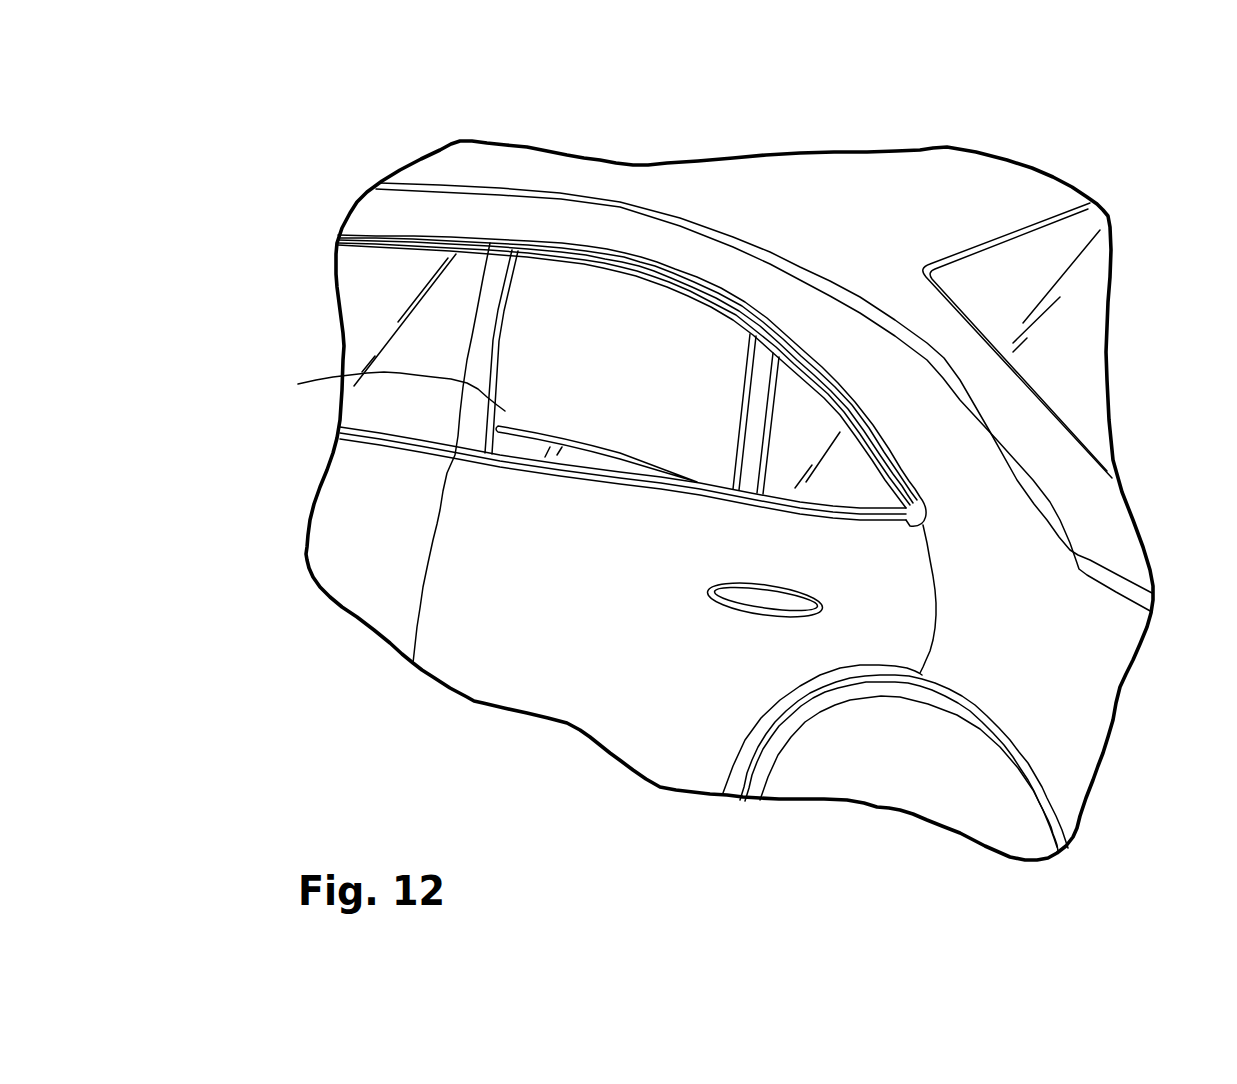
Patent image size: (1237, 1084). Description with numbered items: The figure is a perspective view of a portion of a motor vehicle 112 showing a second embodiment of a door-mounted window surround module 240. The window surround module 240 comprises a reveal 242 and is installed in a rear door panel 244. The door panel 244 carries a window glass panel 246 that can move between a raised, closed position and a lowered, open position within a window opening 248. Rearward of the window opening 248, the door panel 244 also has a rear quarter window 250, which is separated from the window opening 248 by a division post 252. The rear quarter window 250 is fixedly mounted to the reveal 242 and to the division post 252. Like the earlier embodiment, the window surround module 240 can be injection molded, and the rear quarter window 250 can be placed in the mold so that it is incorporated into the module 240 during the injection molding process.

The vehicle body 112 is at (1006, 184).
The window surround module 240 is at (826, 362).
The reveal 242 is at (603, 277).
The rear door panel 244 is at (917, 617).
The window glass panel 246 is at (379, 391).
The window opening 248 is at (578, 381).
The rear quarter window 250 is at (866, 492).
The division post 252 is at (748, 377).